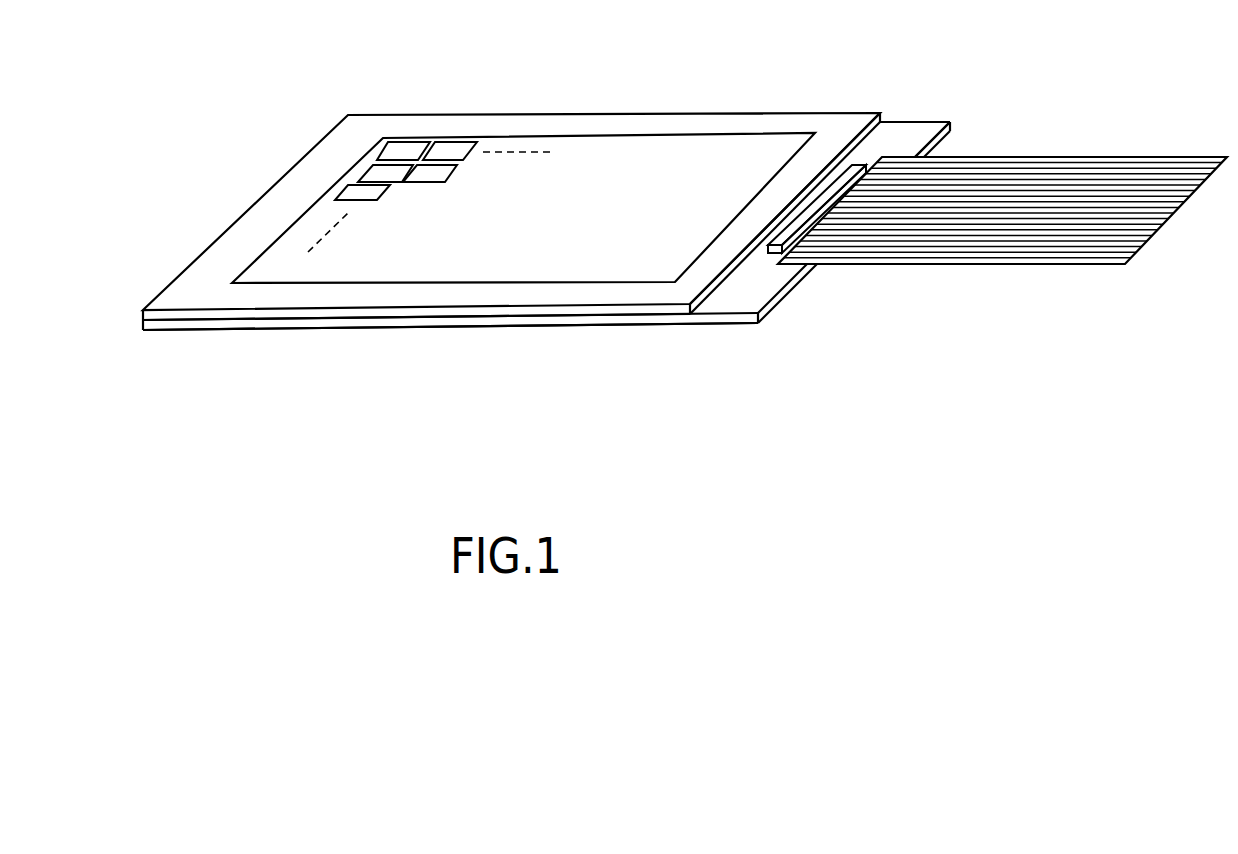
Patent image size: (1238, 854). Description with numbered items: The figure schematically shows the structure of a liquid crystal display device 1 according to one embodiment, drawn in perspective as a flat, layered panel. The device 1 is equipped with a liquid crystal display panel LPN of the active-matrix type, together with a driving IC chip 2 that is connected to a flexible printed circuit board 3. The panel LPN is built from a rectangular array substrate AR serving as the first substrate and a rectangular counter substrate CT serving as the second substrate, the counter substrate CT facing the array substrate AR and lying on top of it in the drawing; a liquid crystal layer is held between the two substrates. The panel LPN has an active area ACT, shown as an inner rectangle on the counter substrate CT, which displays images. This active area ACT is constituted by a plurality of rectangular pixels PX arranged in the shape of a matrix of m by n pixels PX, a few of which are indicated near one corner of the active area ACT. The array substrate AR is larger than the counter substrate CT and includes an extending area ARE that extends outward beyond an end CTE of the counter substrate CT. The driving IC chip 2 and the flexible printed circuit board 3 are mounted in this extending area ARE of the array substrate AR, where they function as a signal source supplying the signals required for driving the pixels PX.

The liquid crystal display device 1 is at (685, 245).
The driving IC chip 2 is at (846, 162).
The flexible printed circuit board 3 is at (1158, 155).
The pixel PX is at (408, 150).
The active area ACT is at (456, 288).
The counter substrate CT is at (550, 313).
The array substrate AR is at (613, 318).
The end of the counter substrate CTE is at (718, 294).
The liquid crystal display panel LPN is at (728, 330).
The extending area ARE is at (915, 125).